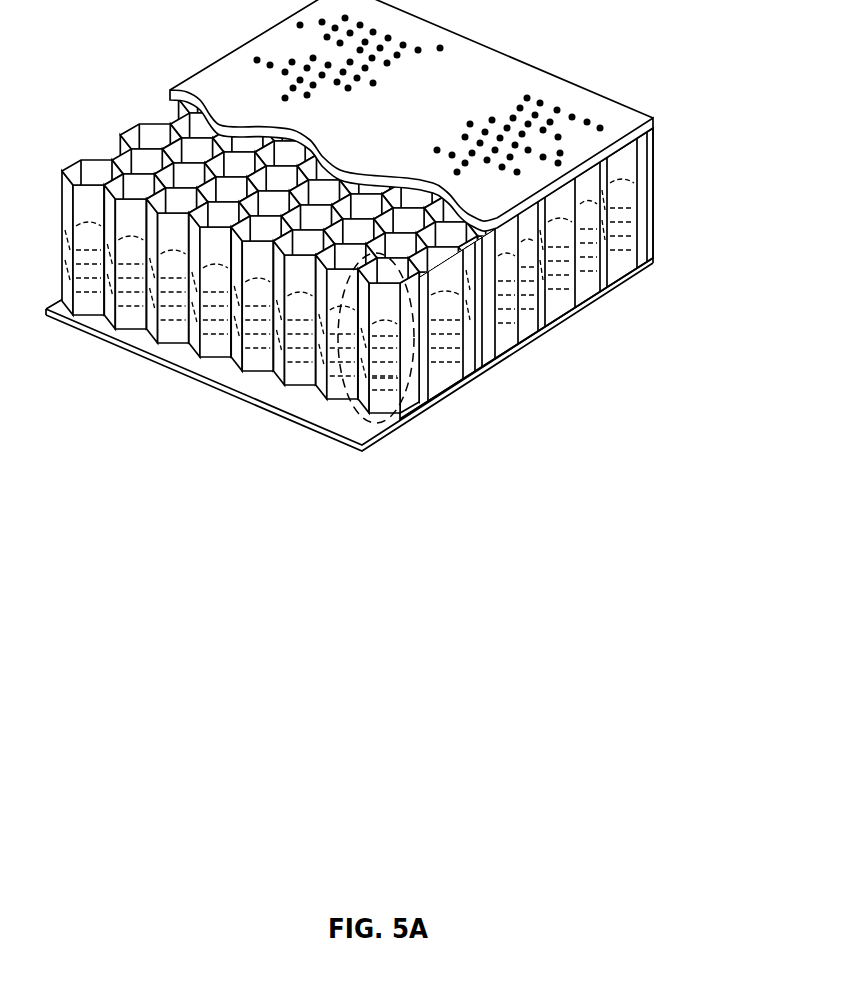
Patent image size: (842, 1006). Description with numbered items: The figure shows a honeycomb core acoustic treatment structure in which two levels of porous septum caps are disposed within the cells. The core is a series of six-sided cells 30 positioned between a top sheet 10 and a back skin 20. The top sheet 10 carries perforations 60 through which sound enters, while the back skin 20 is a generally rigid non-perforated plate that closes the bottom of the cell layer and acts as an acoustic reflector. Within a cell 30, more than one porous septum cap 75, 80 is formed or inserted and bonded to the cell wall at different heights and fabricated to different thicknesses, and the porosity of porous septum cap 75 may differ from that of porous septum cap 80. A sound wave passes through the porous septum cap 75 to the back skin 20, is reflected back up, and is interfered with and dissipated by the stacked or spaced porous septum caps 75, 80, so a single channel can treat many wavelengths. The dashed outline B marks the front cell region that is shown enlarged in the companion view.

The top sheet 10 is at (463, 77).
The back skin 20 is at (550, 317).
The cells 30 is at (448, 270).
The perforations 60 is at (590, 112).
The porous septum cap 75 is at (408, 338).
The porous septum cap 80 is at (412, 380).
The detail region B is at (410, 422).